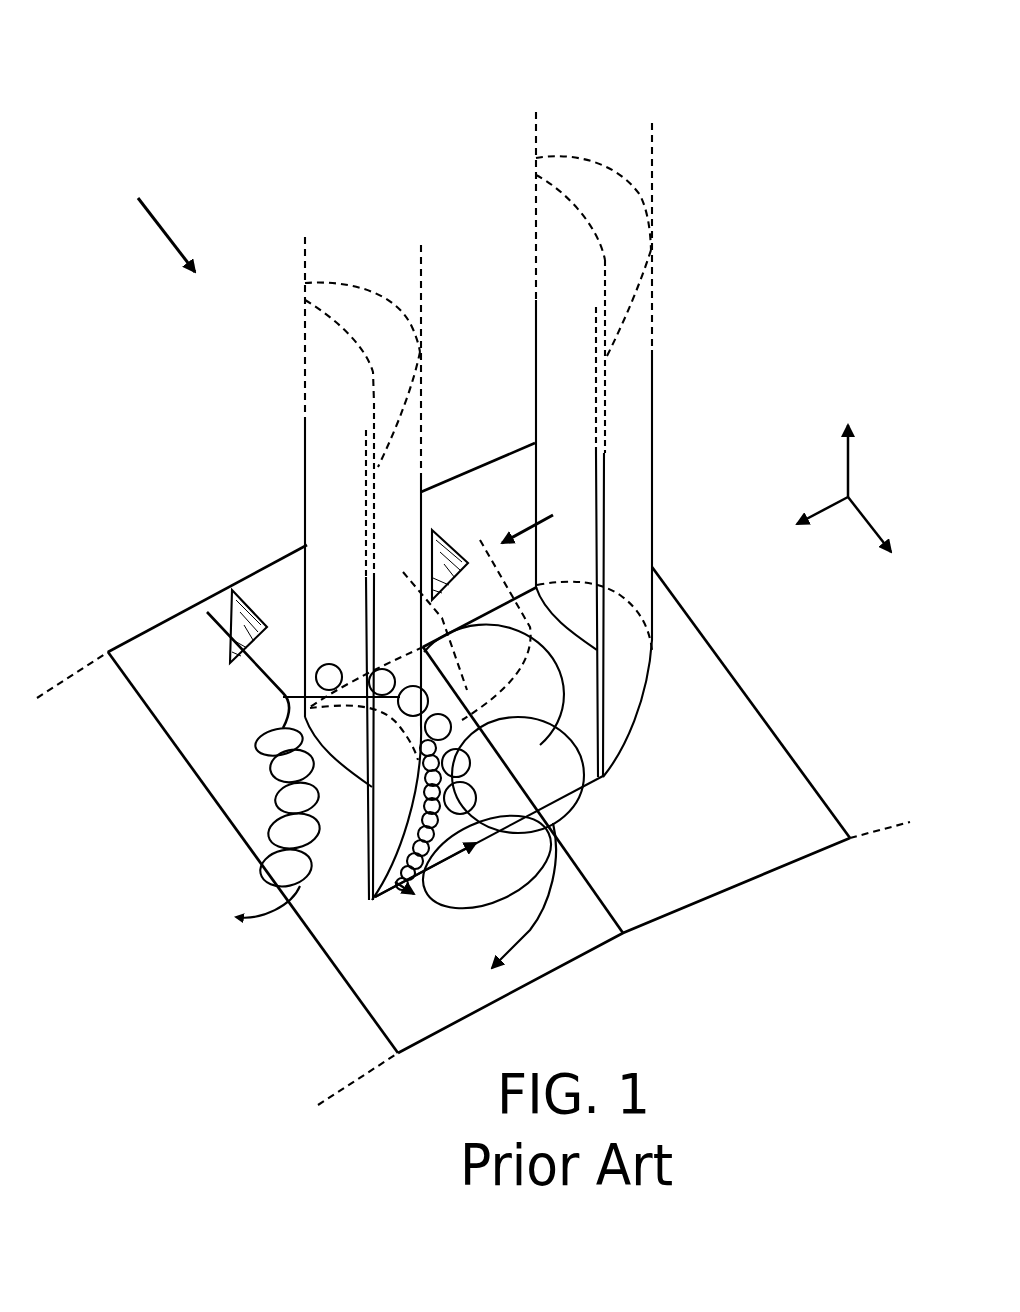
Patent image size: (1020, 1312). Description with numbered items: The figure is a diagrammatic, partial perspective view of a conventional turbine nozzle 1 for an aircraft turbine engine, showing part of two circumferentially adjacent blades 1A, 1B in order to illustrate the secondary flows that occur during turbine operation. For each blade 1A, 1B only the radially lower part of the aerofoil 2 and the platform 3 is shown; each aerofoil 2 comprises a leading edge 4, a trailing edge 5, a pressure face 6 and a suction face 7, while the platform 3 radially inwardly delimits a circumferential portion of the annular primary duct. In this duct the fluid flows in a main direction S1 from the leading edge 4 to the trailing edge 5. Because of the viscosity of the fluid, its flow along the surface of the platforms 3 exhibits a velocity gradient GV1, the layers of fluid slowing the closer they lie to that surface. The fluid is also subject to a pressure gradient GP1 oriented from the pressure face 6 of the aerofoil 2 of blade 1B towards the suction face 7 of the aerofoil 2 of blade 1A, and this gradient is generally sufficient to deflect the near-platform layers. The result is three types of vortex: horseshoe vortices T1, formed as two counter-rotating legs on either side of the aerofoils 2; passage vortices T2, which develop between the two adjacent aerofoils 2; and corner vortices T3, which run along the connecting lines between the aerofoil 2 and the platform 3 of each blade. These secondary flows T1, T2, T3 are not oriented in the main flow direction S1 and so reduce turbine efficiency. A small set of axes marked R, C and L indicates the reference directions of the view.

The turbine nozzle 1 is at (485, 52).
The blade 1A is at (469, 471).
The blade 1B is at (552, 108).
The aerofoil 2 is at (378, 300).
The platform 3 is at (753, 857).
The leading edge 4 is at (305, 452).
The trailing edge 5 is at (365, 570).
The pressure face 6 is at (347, 395).
The suction face 7 is at (410, 458).
The direction of flow S1 is at (158, 215).
The velocity gradient GV1 is at (230, 610).
The pressure gradient GP1 is at (527, 535).
The horseshoe vortex T1 is at (320, 667).
The passage vortex T2 is at (587, 813).
The corner vortex T3 is at (378, 902).
The radial direction R is at (866, 451).
The circumferential direction C is at (820, 531).
The axial direction L is at (870, 544).